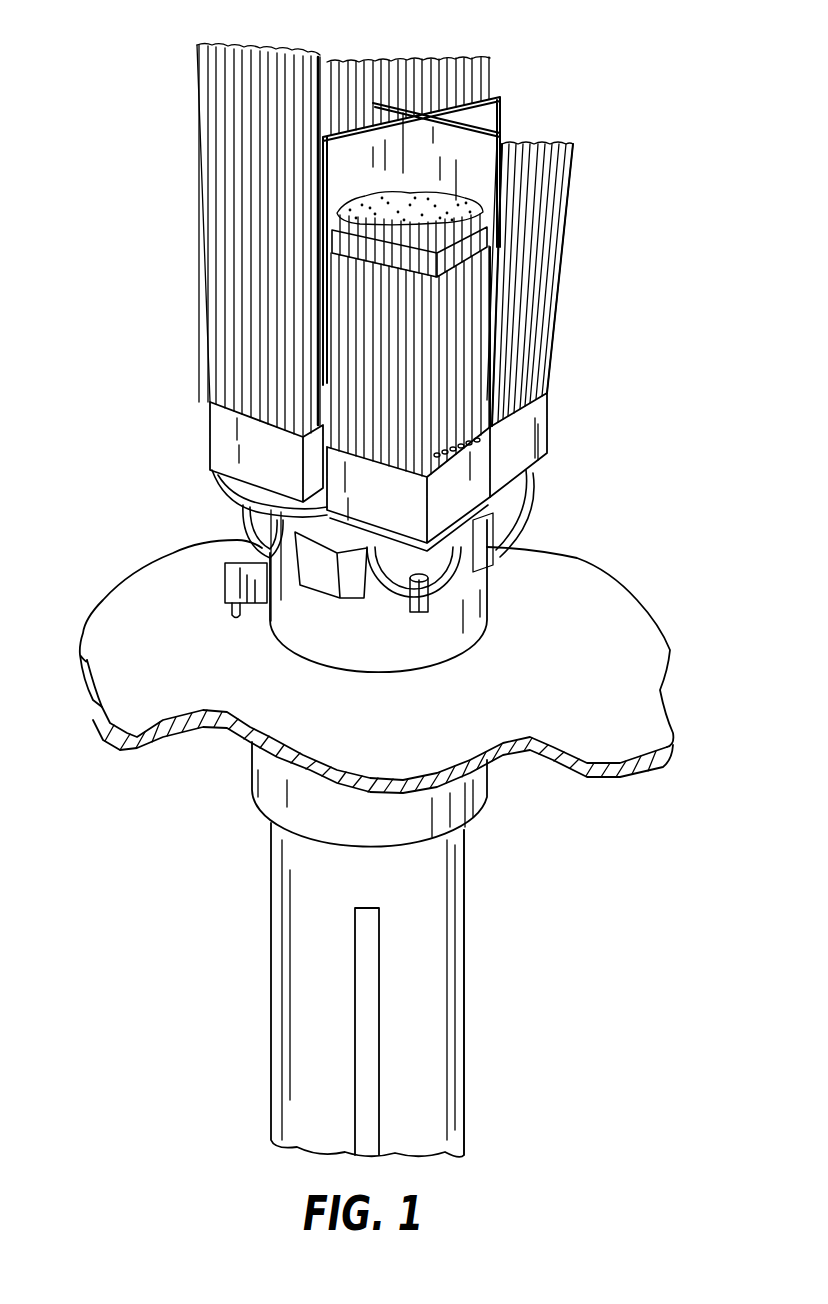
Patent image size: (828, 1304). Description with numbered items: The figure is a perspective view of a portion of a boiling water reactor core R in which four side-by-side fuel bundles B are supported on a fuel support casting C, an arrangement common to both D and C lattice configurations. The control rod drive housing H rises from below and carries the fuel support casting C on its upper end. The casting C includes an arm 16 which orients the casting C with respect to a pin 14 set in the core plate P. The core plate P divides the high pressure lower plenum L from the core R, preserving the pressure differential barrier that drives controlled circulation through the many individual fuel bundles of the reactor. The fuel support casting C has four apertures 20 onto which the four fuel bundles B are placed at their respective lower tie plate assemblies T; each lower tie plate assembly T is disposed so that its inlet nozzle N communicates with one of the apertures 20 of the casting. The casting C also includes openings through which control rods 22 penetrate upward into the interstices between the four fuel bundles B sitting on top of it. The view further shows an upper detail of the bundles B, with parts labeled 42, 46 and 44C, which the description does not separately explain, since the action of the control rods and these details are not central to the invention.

The box sleeve 42 is at (395, 148).
The fuel bundle B is at (490, 72).
The control rod 22 is at (510, 132).
The core R is at (640, 145).
The slab plate 46 is at (333, 246).
The bristle portion 44C is at (462, 290).
The aperture 20 is at (250, 540).
The lower tie plate assembly T is at (225, 488).
The arm 16 is at (243, 583).
The pin 14 is at (230, 608).
The core plate P is at (196, 668).
The fuel support casting C is at (372, 659).
The inlet nozzle N is at (447, 572).
The lower plenum L is at (203, 897).
The control rod drive housing H is at (466, 992).